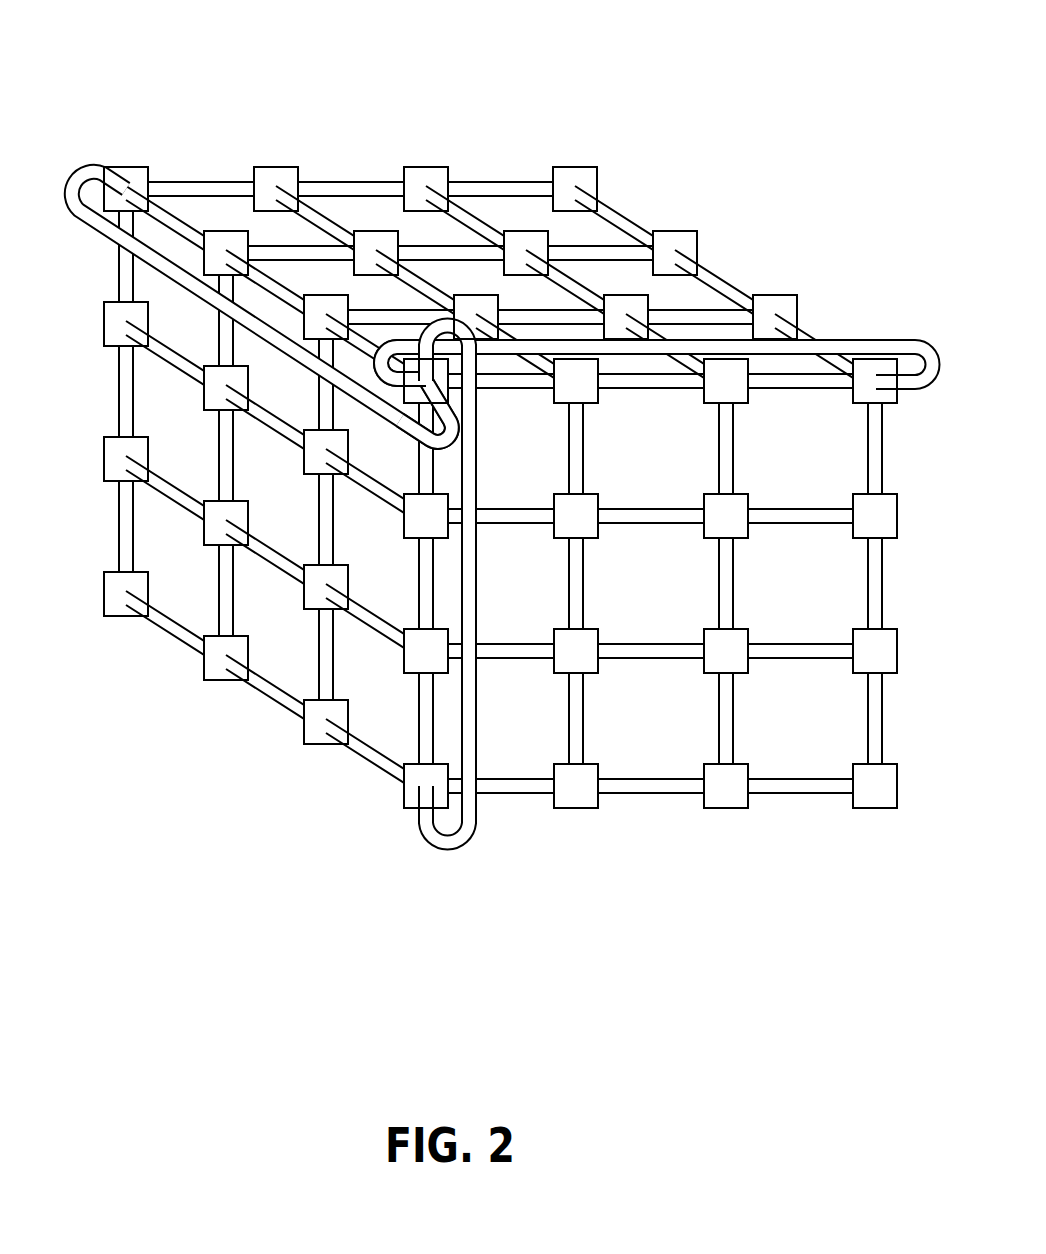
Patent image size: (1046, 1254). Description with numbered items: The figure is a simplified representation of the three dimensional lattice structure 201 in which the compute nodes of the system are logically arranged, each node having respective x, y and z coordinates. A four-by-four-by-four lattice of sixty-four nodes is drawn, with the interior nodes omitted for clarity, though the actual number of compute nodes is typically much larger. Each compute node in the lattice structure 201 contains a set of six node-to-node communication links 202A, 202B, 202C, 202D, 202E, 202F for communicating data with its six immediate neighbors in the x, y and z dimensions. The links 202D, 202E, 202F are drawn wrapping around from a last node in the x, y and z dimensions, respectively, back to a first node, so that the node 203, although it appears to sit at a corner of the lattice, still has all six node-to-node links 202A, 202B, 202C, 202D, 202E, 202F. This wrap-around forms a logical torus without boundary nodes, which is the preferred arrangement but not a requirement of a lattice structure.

The three dimensional lattice structure 201 is at (489, 446).
The node-to-node communication link 202A is at (483, 391).
The node-to-node communication link 202B is at (420, 474).
The node-to-node communication link 202C is at (374, 343).
The node-to-node communication link 202D is at (893, 340).
The node-to-node communication link 202E is at (461, 849).
The node-to-node communication link 202F is at (70, 173).
The node 203 is at (420, 386).